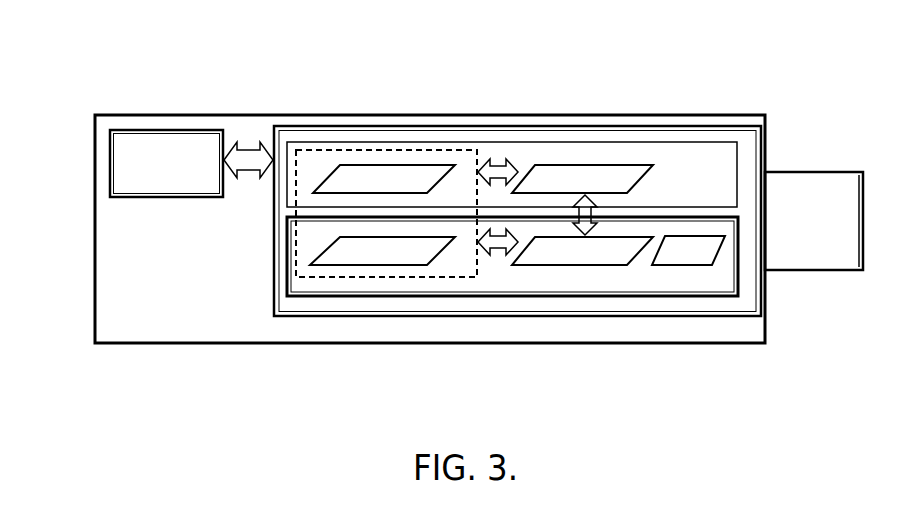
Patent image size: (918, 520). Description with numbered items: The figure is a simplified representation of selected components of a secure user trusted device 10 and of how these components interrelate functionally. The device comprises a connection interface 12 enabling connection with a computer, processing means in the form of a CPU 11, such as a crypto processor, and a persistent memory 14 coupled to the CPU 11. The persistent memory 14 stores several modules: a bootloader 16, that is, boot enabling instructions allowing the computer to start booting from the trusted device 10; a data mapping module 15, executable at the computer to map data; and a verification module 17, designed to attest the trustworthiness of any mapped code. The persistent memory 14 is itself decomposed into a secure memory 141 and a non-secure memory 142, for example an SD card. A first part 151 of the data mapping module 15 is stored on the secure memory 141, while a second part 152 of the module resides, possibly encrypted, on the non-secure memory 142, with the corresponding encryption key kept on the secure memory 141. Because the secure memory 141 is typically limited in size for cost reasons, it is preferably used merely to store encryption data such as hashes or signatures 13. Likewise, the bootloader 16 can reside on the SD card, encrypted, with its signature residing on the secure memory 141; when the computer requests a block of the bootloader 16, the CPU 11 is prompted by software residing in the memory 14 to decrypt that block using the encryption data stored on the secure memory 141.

The user trusted device 10 is at (162, 330).
The CPU 11 is at (120, 130).
The connection interface 12 is at (852, 172).
The hashes/signatures 13 is at (722, 247).
The persistent memory 14 is at (332, 127).
The secure memory 141 is at (663, 296).
The non-secure memory 142 is at (683, 142).
The data mapping module 15 is at (455, 278).
The first part of the data mapping module 151 is at (368, 266).
The second part of the data mapping module 152 is at (438, 165).
The bootloader 16 is at (566, 165).
The verification module 17 is at (600, 266).